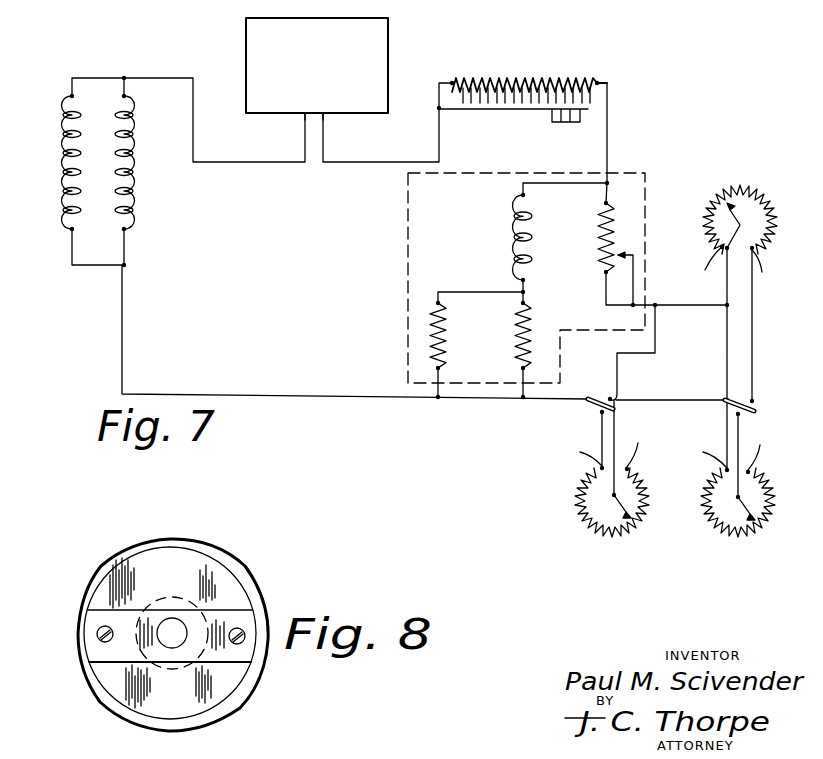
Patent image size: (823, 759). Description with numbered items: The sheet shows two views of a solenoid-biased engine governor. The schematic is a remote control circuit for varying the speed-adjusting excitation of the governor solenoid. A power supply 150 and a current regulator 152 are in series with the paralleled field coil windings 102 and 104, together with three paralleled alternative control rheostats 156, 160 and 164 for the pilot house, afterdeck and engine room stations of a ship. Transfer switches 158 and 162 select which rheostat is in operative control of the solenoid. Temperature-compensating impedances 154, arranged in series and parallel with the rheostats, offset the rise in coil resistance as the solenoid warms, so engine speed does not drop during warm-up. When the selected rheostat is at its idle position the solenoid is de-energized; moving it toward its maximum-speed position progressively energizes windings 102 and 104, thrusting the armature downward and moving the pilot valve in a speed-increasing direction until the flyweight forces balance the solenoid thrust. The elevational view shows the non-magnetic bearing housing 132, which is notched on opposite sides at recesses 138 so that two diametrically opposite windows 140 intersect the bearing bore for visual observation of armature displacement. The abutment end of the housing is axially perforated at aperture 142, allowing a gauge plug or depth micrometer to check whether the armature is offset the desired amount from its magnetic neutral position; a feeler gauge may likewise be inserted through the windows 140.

In FIG. 7, the field coil winding 102 is at (68, 228).
In FIG. 7, the field coil winding 104 is at (135, 195).
In FIG. 7, the power supply 150 is at (377, 70).
In FIG. 7, the current regulator 152 is at (500, 80).
In FIG. 7, the temperature-compensating impedances 154 is at (404, 222).
In FIG. 7, the control rheostat 156 is at (738, 186).
In FIG. 7, the transfer switch 158 is at (757, 410).
In FIG. 7, the control rheostat 160 is at (718, 528).
In FIG. 7, the transfer switch 162 is at (598, 410).
In FIG. 7, the control rheostat 164 is at (592, 528).
In FIG. 8, the bearing housing 132 is at (227, 567).
In FIG. 8, the recesses 138 is at (110, 672).
In FIG. 8, the windows 140 is at (172, 666).
In FIG. 8, the housing aperture 142 is at (172, 622).